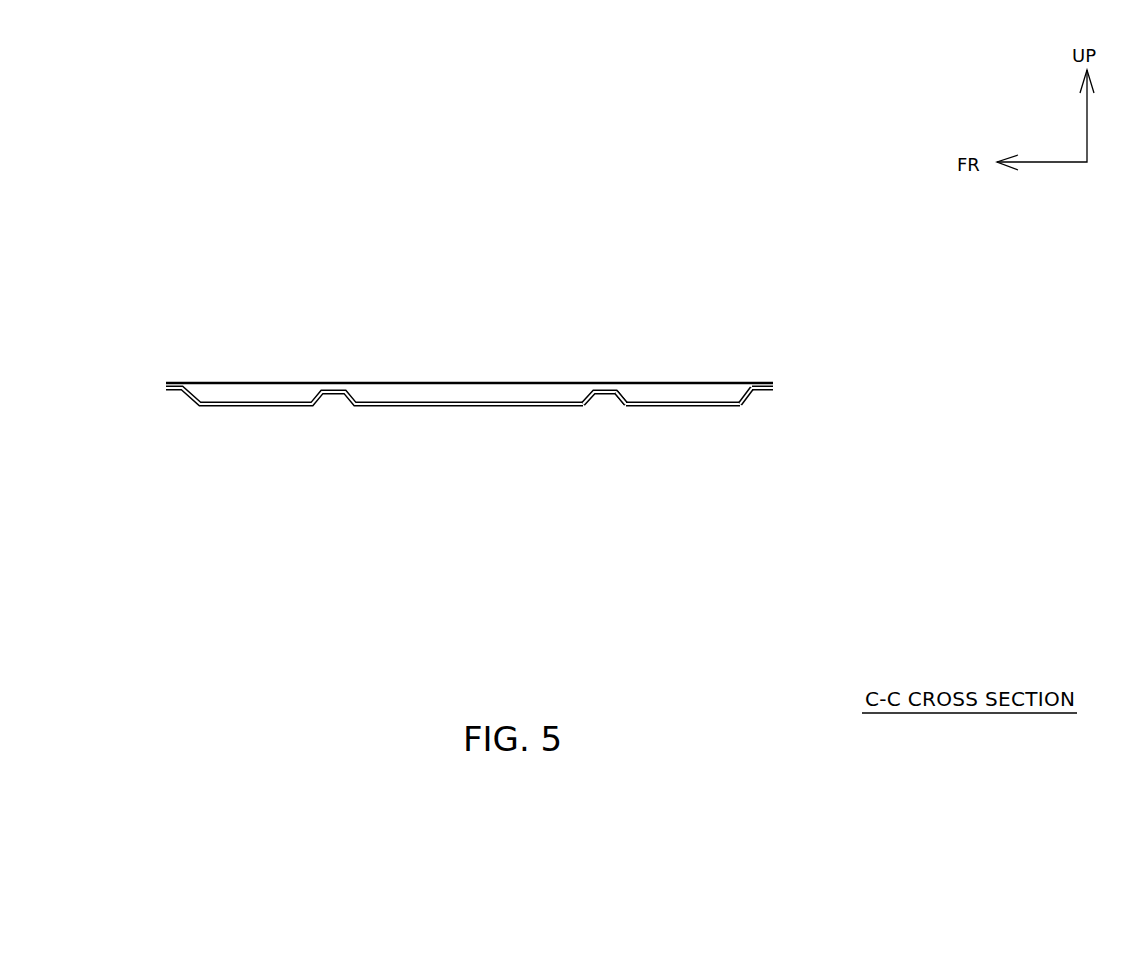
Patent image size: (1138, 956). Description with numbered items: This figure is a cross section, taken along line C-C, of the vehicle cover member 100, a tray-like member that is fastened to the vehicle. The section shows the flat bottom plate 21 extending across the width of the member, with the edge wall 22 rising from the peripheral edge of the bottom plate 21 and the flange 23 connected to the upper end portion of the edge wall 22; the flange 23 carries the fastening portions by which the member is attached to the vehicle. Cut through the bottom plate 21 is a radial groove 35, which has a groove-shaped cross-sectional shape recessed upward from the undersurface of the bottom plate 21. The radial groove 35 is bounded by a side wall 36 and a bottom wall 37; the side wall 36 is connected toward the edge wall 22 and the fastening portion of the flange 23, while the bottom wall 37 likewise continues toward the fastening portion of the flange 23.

The vehicle cover member 100 is at (197, 414).
The bottom plate 21 is at (693, 412).
The edge wall 22 is at (755, 402).
The flange 23 is at (765, 393).
The radial groove 35 is at (607, 406).
The side wall 36 is at (628, 396).
The bottom wall 37 is at (608, 392).